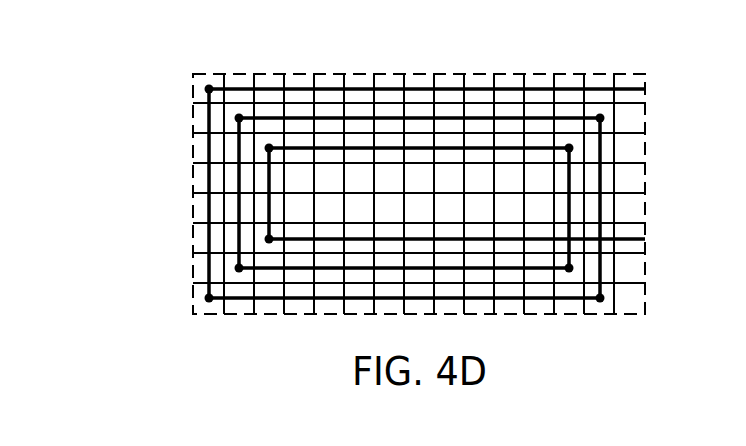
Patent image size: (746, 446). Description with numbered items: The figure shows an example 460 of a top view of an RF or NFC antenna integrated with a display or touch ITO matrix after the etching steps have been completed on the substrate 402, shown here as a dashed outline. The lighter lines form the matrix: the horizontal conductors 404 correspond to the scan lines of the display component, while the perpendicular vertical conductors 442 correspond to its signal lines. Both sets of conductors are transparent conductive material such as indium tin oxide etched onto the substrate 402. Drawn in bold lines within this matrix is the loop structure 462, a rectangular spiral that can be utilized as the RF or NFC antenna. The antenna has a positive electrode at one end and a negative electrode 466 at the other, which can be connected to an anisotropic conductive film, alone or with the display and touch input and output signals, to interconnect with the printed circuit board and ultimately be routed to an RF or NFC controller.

The substrate 402 is at (376, 73).
The first conductors 404 is at (644, 89).
The third conductors 442 is at (277, 314).
The example 460 is at (683, 94).
The loop structure 462 is at (558, 300).
The negative electrode 466 is at (646, 243).